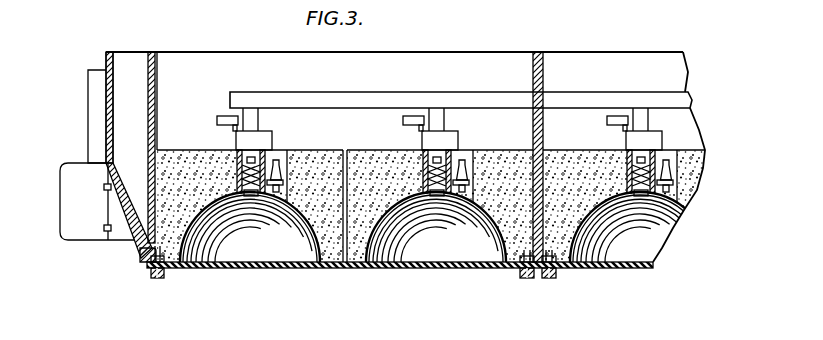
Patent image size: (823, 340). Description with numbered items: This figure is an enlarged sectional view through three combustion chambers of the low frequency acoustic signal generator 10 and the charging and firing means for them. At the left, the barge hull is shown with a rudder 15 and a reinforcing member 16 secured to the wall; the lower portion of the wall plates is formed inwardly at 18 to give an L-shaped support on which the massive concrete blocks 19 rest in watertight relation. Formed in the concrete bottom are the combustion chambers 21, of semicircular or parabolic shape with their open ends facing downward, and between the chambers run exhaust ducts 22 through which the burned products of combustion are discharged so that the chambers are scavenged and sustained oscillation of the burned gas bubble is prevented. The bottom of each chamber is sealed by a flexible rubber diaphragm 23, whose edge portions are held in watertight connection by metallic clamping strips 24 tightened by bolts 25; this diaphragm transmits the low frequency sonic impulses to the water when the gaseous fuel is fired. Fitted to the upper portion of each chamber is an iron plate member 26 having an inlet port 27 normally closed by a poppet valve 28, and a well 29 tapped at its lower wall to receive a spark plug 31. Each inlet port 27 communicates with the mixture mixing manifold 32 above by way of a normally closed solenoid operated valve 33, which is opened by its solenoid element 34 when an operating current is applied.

The low frequency acoustic signal generator 10 is at (84, 142).
The rudder 15 is at (64, 205).
The reinforcing member 16 is at (533, 120).
The inwardly formed lower wall portion 18 is at (147, 249).
The concrete block 19 is at (172, 150).
The combustion chamber 21 is at (259, 256).
The exhaust duct 22 is at (345, 150).
The flexible diaphragm 23 is at (248, 270).
The metallic clamping strip 24 is at (151, 266).
The bolt 25 is at (160, 279).
The plate member 26 is at (275, 210).
The inlet port 27 is at (245, 150).
The poppet valve 28 is at (255, 198).
The well 29 is at (287, 162).
The spark plug 31 is at (283, 172).
The mixture mixing manifold 32 is at (452, 93).
The solenoid operated valve 33 is at (271, 131).
The solenoid element 34 is at (218, 119).